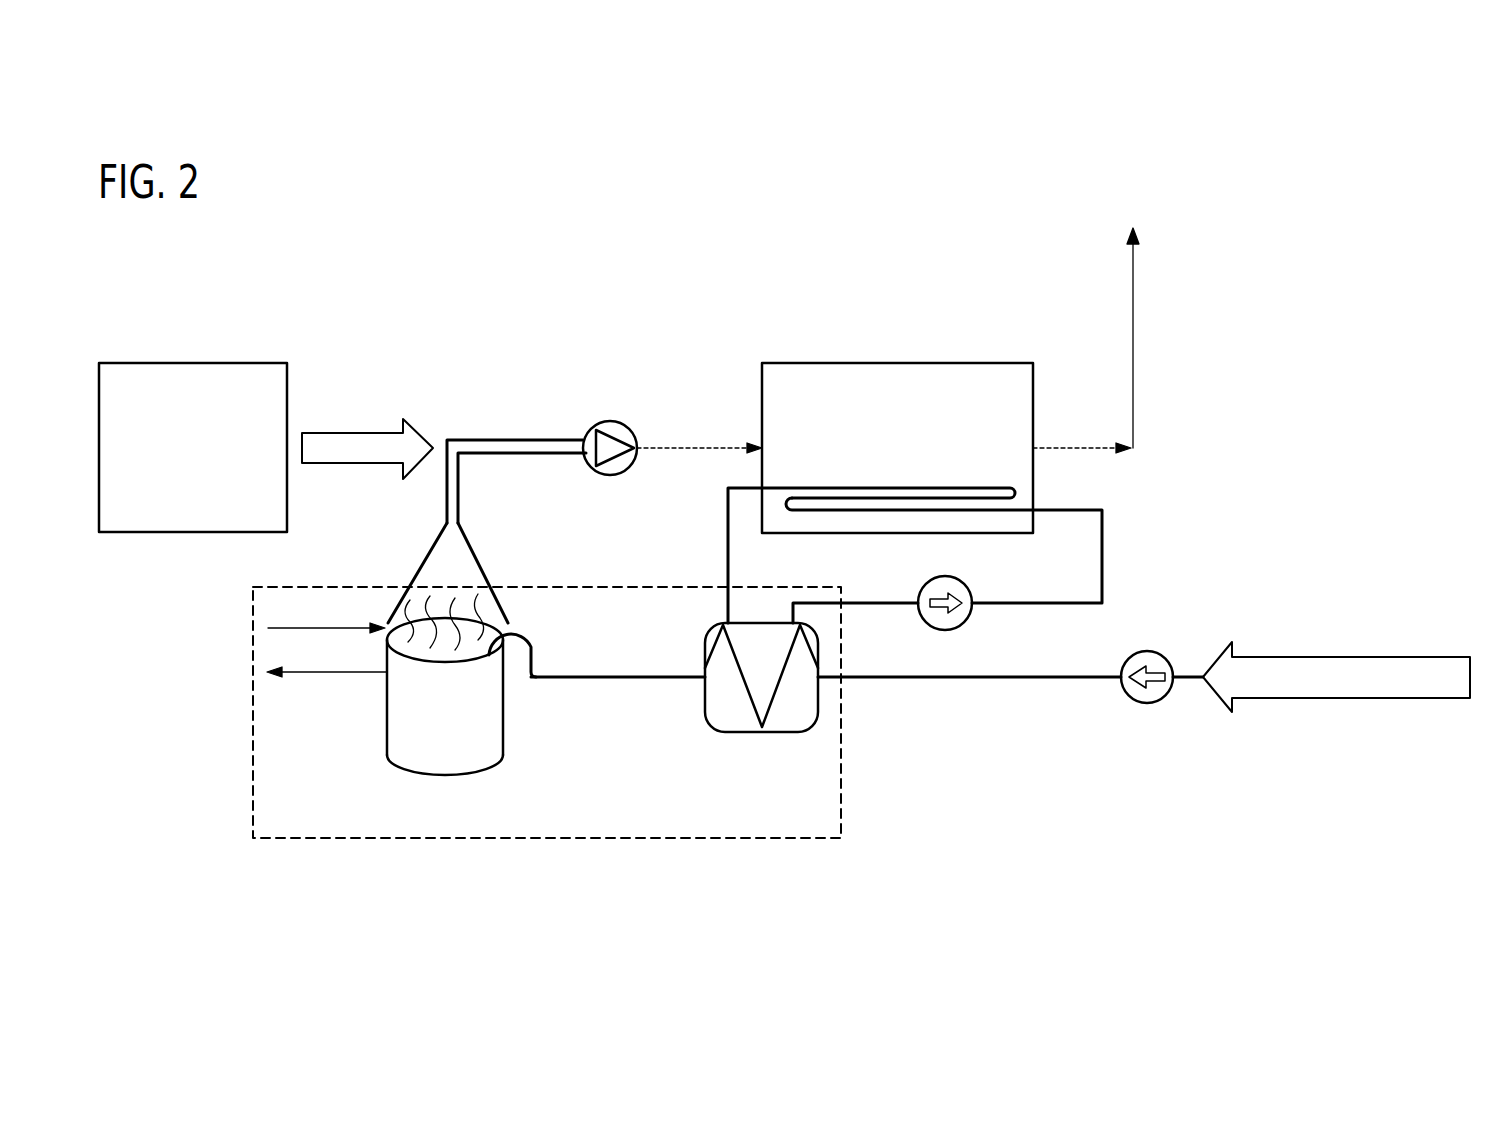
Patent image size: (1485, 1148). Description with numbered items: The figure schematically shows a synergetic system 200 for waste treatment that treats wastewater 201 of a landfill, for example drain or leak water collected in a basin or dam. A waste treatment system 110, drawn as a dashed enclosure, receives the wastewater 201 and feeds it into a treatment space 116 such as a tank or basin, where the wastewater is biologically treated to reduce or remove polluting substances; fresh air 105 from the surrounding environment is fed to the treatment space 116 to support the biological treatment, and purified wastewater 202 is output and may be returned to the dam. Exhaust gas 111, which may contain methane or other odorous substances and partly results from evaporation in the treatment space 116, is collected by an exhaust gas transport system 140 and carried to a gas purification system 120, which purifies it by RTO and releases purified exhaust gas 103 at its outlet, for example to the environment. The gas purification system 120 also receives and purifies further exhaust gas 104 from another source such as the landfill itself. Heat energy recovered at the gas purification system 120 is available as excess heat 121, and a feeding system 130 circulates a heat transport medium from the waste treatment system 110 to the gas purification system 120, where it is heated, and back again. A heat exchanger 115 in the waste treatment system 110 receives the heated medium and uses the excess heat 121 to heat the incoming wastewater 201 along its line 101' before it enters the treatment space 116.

The further exhaust gas 104 is at (190, 362).
The exhaust gas transport system 140 is at (524, 437).
The exhaust gas 111 is at (463, 588).
The gas purification system 120 is at (894, 362).
The purified exhaust gas 103 is at (1092, 324).
The excess heat 121 is at (726, 543).
The feeding system 130 is at (1104, 564).
The heat exchanger 115 is at (779, 735).
The leak water line 101' is at (867, 644).
The waste treatment system 110 is at (844, 762).
The treatment space 116 is at (507, 730).
The fresh air 105 is at (345, 582).
The purified wastewater 202 is at (335, 758).
The wastewater 201 is at (1350, 655).
The synergetic system 200 is at (1328, 840).